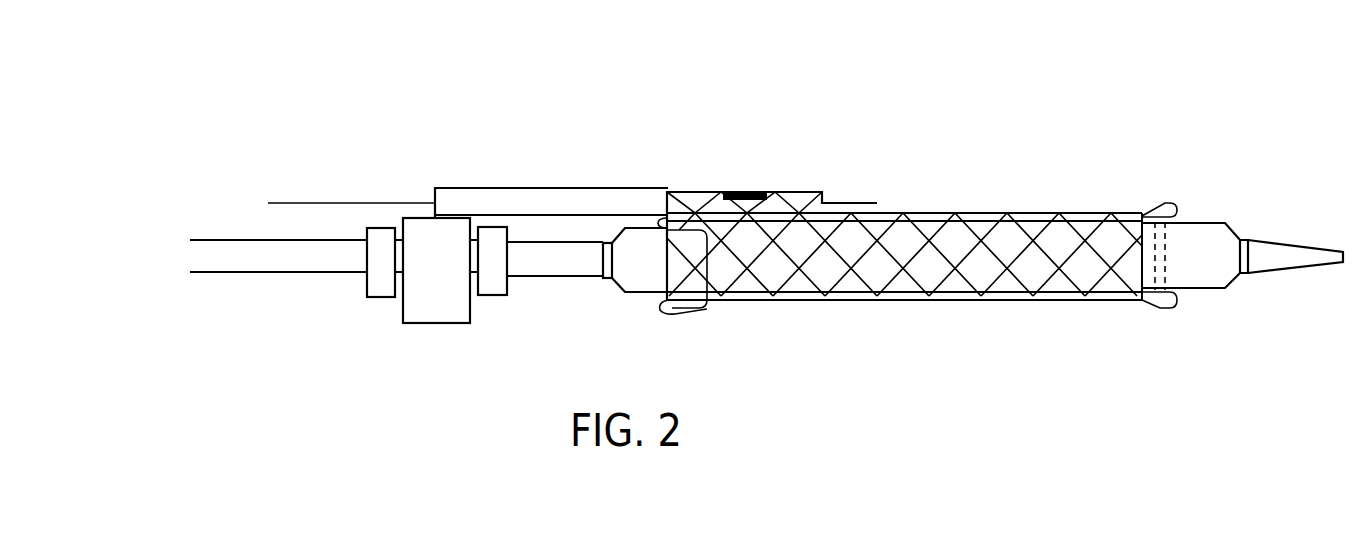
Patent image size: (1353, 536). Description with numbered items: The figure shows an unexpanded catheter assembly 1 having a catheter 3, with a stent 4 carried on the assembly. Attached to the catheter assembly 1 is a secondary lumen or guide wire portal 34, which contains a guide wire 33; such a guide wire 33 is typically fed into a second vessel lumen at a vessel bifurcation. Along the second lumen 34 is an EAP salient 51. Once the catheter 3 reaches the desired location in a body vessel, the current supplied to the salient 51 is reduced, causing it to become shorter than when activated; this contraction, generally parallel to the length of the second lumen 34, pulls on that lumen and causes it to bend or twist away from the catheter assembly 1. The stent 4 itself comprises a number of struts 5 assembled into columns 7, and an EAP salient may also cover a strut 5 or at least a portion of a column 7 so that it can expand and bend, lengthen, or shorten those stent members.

The catheter assembly 1 is at (1017, 210).
The catheter 3 is at (238, 257).
The stent 4 is at (933, 240).
The strut 5 is at (1100, 212).
The column 7 is at (1083, 230).
The guide wire 33 is at (865, 202).
The secondary lumen or guide wire portal 34 is at (645, 200).
The EAP salient 51 is at (753, 193).